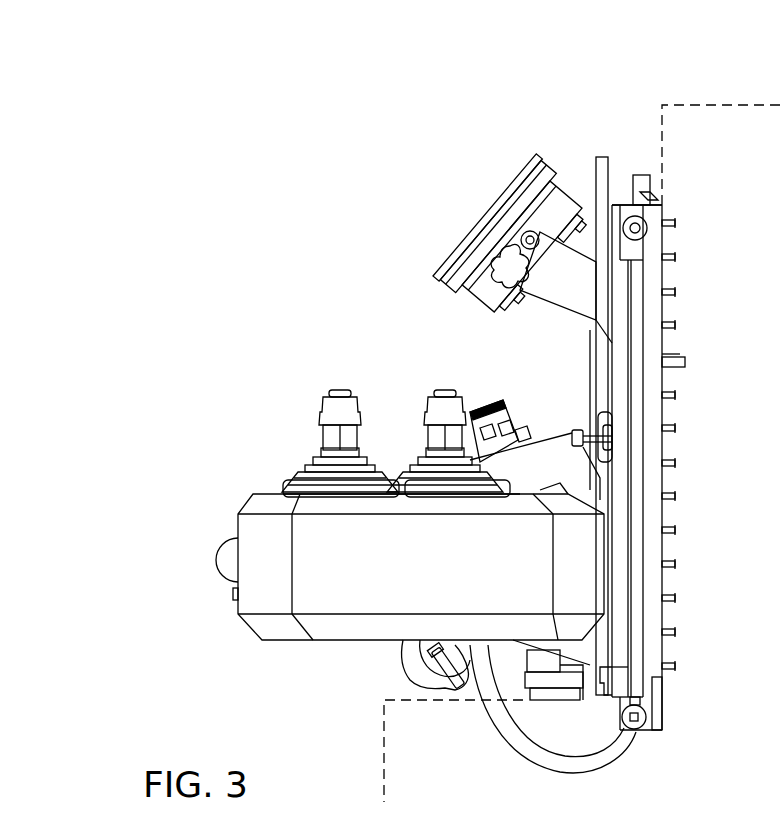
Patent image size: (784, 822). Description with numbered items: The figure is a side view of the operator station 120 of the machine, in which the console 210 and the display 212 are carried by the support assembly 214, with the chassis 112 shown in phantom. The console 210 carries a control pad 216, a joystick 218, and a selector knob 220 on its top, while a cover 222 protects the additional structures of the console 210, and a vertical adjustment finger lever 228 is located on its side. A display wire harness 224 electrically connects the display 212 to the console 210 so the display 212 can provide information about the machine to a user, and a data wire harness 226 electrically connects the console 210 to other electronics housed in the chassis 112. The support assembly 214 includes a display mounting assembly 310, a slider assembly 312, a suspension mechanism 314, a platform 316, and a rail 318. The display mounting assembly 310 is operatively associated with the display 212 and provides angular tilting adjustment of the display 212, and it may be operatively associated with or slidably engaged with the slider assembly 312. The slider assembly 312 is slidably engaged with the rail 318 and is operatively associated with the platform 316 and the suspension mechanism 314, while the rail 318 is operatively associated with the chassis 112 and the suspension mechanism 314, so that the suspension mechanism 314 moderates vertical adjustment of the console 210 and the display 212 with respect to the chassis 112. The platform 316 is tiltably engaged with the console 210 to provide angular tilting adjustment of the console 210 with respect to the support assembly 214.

The operator station 120 is at (200, 137).
The chassis 112 is at (663, 780).
The display 212 is at (497, 68).
The display wire harness 224 is at (598, 170).
The support assembly 214 is at (398, 257).
The display mounting assembly 310 is at (525, 240).
The rail 318 is at (642, 180).
The suspension mechanism 314 is at (643, 350).
The slider assembly 312 is at (610, 376).
The control pad 216 is at (522, 418).
The cover 222 is at (268, 492).
The vertical adjustment finger lever 228 is at (230, 566).
The console 210 is at (400, 428).
The joystick 218 is at (330, 392).
The selector knob 220 is at (493, 412).
The platform 316 is at (477, 694).
The data wire harness 226 is at (517, 745).